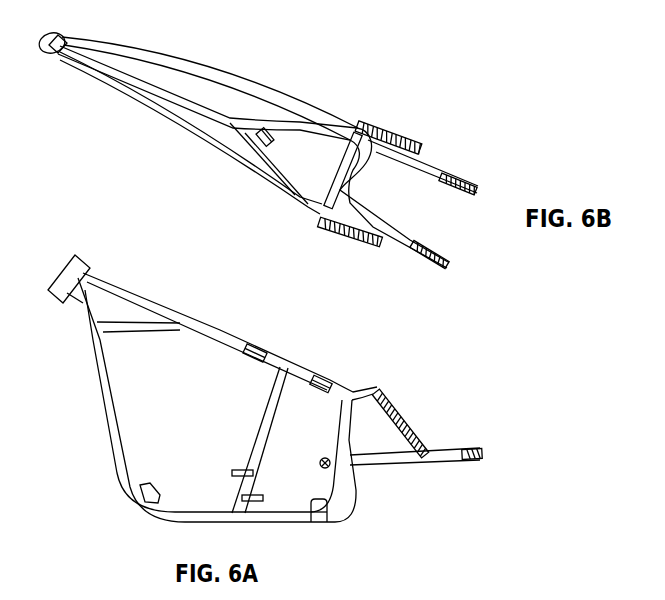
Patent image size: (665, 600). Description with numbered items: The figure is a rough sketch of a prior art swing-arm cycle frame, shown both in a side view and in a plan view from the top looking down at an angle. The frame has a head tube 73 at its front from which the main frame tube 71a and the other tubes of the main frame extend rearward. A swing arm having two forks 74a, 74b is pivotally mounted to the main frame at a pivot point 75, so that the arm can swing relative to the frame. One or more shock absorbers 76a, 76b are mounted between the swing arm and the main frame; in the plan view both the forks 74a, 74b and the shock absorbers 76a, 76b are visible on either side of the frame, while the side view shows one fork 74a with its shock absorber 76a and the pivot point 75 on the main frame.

In FIG. 6B, the head tube 73 is at (52, 54).
In FIG. 6A, the head tube 73 is at (65, 267).
In FIG. 6B, the main frame tube 71a is at (297, 193).
In FIG. 6A, the main frame tube 71a is at (313, 372).
In FIG. 6B, the fork 74a is at (415, 257).
In FIG. 6A, the fork 74a is at (442, 450).
In FIG. 6B, the fork 74b is at (440, 163).
In FIG. 6A, the pivot point 75 is at (322, 459).
In FIG. 6B, the shock absorber 76a is at (360, 238).
In FIG. 6A, the shock absorber 76a is at (403, 392).
In FIG. 6B, the shock absorber 76b is at (390, 128).